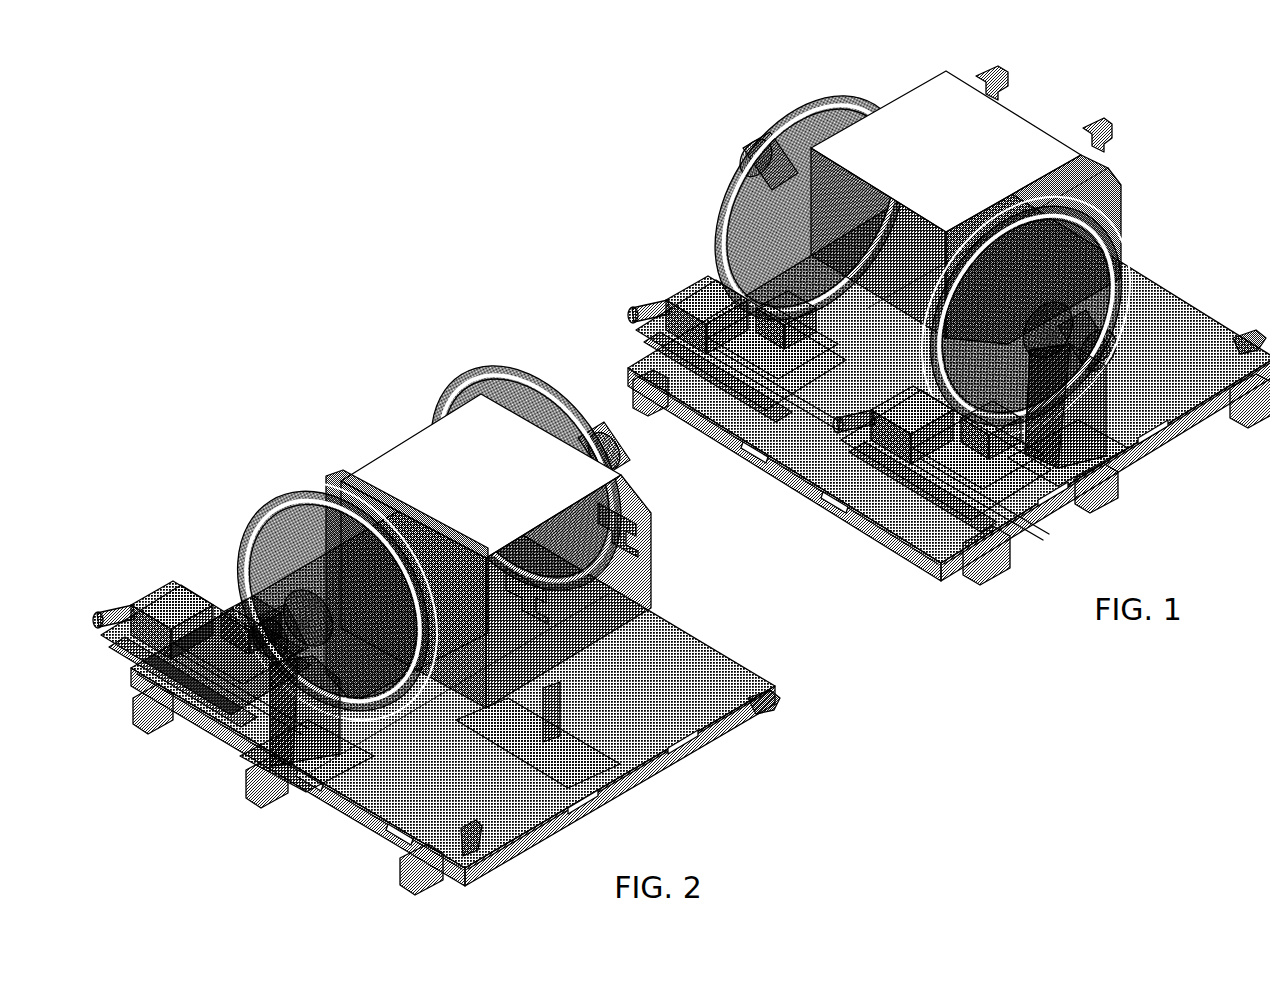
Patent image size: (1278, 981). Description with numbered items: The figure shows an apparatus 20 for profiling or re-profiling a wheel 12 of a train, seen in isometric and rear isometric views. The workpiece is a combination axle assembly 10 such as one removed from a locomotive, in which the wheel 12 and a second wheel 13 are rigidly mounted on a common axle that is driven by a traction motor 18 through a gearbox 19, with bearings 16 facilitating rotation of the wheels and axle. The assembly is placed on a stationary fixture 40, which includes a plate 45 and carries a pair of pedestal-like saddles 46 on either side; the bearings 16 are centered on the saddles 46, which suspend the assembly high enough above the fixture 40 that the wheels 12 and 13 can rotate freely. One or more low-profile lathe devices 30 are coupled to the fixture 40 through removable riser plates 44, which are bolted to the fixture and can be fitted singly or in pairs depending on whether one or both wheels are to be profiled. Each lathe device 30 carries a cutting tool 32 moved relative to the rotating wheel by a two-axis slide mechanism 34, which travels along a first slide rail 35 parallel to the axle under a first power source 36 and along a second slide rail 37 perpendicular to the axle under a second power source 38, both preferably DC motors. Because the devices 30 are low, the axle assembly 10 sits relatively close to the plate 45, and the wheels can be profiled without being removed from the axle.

In FIG. 1, the combination axle assembly 10 is at (929, 263).
In FIG. 2, the combination axle assembly 10 is at (459, 559).
In FIG. 1, the wheel 12 is at (735, 195).
In FIG. 2, the wheel 12 is at (535, 388).
In FIG. 1, the second wheel 13 is at (1113, 259).
In FIG. 2, the second wheel 13 is at (252, 512).
In FIG. 1, the bearings 16 is at (740, 146).
In FIG. 2, the bearings 16 is at (592, 418).
In FIG. 1, the traction motor 18 is at (1030, 118).
In FIG. 2, the traction motor 18 is at (432, 408).
In FIG. 1, the gearbox 19 is at (1113, 191).
In FIG. 2, the gearbox 19 is at (332, 488).
In FIG. 1, the apparatus 20 is at (1150, 84).
In FIG. 2, the apparatus 20 is at (346, 390).
In FIG. 1, the lathe device 30 is at (857, 411).
In FIG. 2, the lathe device 30 is at (187, 560).
In FIG. 1, the cutting tool 32 is at (742, 268).
In FIG. 1, the 2-axis slide mechanism 34 is at (700, 425).
In FIG. 1, the first slide rail 35 is at (832, 300).
In FIG. 1, the first power source 36 is at (812, 363).
In FIG. 1, the second slide rail 37 is at (680, 292).
In FIG. 1, the second power source 38 is at (655, 330).
In FIG. 1, the fixture 40 is at (1172, 313).
In FIG. 2, the fixture 40 is at (706, 742).
In FIG. 1, the riser plate 44 is at (668, 393).
In FIG. 1, the plate 45 is at (1127, 331).
In FIG. 2, the plate 45 is at (624, 697).
In FIG. 1, the saddles 46 is at (1112, 458).
In FIG. 2, the saddles 46 is at (247, 696).